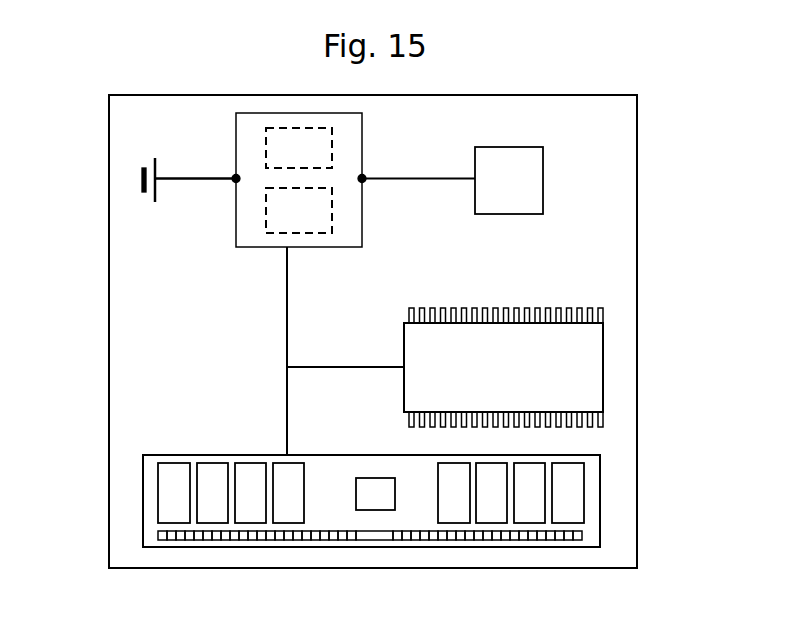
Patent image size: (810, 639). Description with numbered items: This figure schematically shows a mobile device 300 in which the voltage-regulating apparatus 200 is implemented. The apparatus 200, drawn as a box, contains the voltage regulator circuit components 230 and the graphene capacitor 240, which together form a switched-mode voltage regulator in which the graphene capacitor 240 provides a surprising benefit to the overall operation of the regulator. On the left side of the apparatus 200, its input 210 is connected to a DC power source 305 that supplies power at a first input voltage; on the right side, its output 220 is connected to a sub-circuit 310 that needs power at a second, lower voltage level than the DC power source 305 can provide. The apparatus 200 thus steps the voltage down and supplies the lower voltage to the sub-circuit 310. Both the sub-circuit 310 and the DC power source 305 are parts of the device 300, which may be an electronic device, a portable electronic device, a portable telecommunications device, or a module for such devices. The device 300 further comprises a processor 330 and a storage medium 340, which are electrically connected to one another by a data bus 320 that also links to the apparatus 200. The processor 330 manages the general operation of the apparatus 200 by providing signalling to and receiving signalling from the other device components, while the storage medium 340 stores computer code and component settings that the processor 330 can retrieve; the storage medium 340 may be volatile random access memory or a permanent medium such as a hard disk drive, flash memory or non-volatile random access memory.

The device 300 is at (84, 128).
The apparatus 200 is at (253, 150).
The voltage regulator circuit components 230 is at (323, 160).
The graphene capacitor 240 is at (323, 228).
The DC power source 305 is at (141, 179).
The input 210 is at (230, 193).
The output 220 is at (368, 174).
The sub-circuit 310 is at (508, 170).
The data bus 320 is at (285, 316).
The processor 330 is at (527, 380).
The storage medium 340 is at (572, 492).